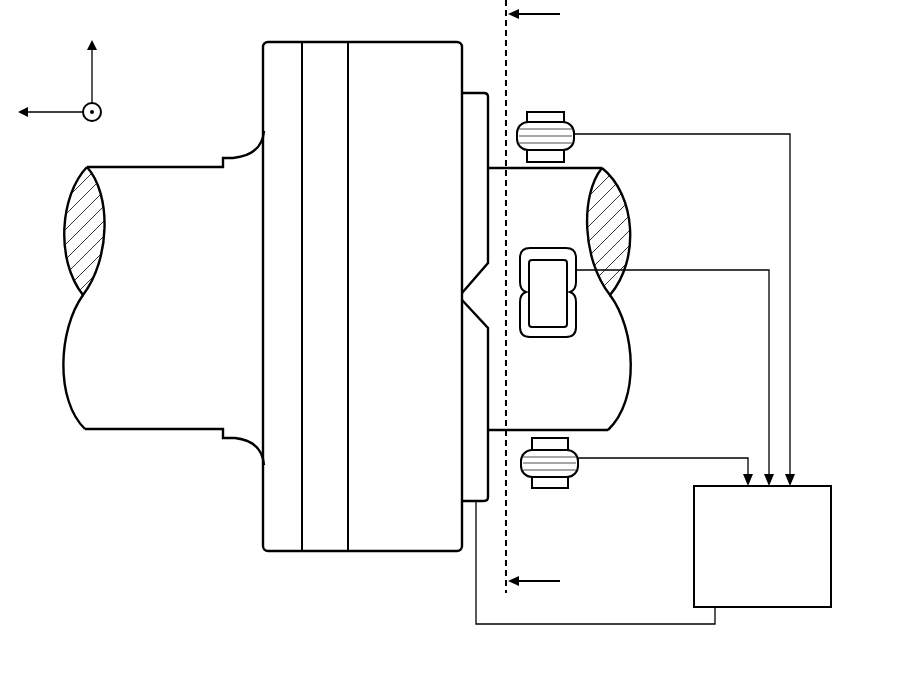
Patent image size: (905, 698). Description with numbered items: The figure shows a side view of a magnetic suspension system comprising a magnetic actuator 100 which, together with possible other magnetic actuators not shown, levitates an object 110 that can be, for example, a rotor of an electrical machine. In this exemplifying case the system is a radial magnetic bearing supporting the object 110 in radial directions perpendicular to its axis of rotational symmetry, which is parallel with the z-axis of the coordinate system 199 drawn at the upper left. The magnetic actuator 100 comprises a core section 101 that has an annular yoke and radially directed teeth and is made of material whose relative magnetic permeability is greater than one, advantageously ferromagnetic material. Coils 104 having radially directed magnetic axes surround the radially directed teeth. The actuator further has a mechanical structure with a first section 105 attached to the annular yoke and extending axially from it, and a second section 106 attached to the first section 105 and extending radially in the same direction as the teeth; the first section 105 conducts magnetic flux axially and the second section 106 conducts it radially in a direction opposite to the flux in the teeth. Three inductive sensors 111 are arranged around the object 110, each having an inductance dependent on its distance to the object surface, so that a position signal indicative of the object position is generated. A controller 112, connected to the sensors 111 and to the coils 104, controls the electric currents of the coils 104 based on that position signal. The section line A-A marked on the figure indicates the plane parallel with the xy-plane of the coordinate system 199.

The magnetic actuator 100 is at (201, 483).
The core section 101 is at (423, 212).
The coils 104 is at (481, 93).
The first section 105 is at (330, 552).
The second section 106 is at (283, 552).
The object 110 is at (181, 306).
The inductive sensors 111 is at (548, 112).
The controller 112 is at (782, 558).
The coordinate system 199 is at (73, 87).